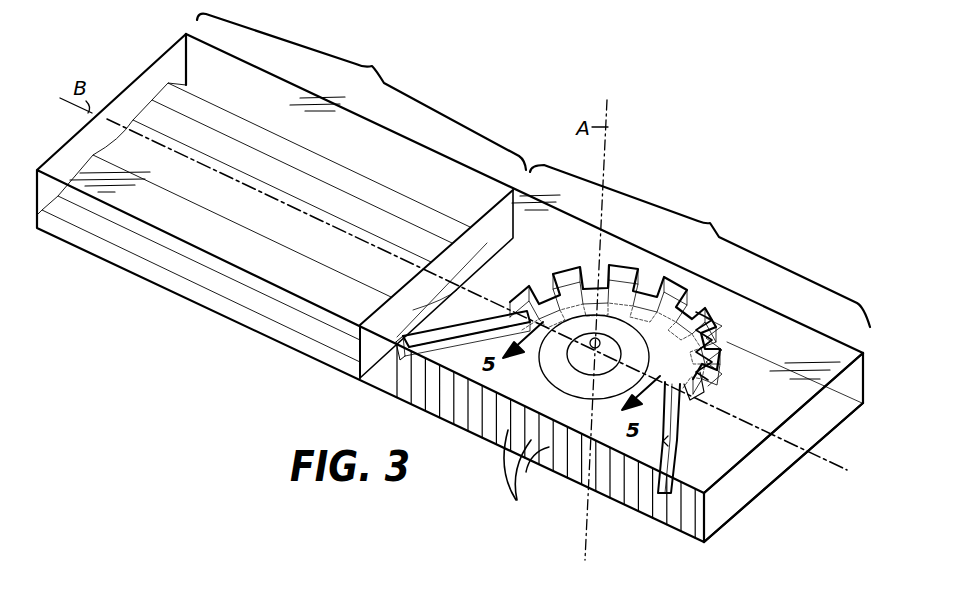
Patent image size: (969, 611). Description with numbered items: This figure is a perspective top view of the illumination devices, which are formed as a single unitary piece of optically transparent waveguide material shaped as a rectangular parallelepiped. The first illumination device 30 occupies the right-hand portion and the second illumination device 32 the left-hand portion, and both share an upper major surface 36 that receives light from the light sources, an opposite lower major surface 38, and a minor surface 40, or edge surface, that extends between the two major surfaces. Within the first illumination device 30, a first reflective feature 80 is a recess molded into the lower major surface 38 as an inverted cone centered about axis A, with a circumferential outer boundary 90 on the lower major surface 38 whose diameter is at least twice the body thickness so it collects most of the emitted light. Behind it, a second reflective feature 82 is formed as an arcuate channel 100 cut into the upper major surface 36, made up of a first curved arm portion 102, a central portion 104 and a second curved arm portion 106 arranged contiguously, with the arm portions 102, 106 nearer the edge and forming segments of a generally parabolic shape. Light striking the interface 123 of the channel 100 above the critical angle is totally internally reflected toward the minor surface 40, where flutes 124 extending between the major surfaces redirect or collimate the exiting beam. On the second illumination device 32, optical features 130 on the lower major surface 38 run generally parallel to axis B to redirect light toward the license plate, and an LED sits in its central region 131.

The first illumination device 30 is at (700, 246).
The second illumination device 32 is at (361, 92).
The upper major surface 36 is at (845, 355).
The lower major surface 38 is at (780, 470).
The minor surface 40 is at (695, 535).
The first reflective feature 80 is at (538, 382).
The second reflective feature 82 is at (689, 279).
The circumferential outer boundary 90 is at (602, 400).
The arcuate channel 100 is at (717, 327).
The first curved arm portion 102 is at (468, 313).
The central portion 104 is at (727, 367).
The second curved arm portion 106 is at (682, 441).
The interface 123 is at (663, 441).
The flutes 124 is at (526, 481).
The optical features 130 is at (120, 143).
The central region 131 is at (215, 185).